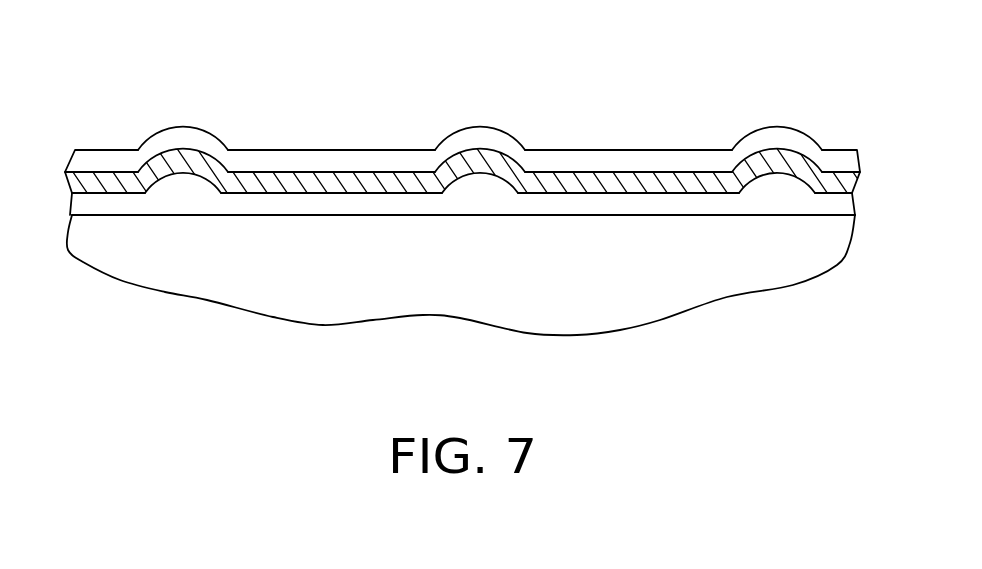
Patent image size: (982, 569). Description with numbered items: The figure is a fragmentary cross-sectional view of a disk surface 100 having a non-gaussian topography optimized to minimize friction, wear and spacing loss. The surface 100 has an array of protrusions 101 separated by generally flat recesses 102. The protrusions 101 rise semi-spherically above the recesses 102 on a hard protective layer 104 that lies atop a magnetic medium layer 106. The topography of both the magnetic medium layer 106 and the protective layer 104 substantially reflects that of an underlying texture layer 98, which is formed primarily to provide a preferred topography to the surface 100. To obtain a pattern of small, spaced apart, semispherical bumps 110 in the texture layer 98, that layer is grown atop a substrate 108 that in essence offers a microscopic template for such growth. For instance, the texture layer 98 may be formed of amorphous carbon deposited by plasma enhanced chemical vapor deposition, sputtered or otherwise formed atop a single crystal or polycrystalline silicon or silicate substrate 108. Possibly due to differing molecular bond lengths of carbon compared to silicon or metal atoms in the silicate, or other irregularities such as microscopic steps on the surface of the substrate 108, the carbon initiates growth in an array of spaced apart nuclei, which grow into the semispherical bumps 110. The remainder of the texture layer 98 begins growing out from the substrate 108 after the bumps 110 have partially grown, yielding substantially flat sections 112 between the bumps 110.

The disk surface 100 is at (141, 36).
The hard protective layer 104 is at (92, 160).
The flat recesses 102 is at (298, 150).
The protrusions 101 is at (192, 126).
The semispherical bumps 110 is at (456, 170).
The magnetic medium layer 106 is at (120, 185).
The texture layer 98 is at (214, 202).
The flat sections 112 is at (362, 204).
The substrate 108 is at (328, 318).